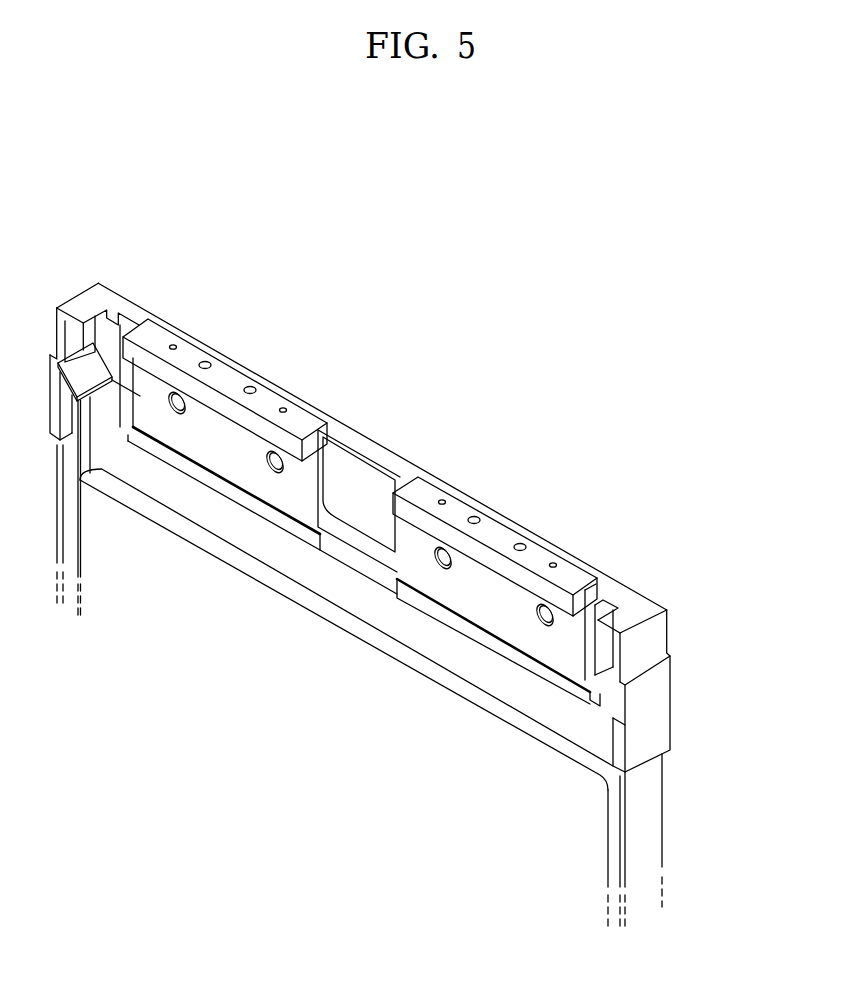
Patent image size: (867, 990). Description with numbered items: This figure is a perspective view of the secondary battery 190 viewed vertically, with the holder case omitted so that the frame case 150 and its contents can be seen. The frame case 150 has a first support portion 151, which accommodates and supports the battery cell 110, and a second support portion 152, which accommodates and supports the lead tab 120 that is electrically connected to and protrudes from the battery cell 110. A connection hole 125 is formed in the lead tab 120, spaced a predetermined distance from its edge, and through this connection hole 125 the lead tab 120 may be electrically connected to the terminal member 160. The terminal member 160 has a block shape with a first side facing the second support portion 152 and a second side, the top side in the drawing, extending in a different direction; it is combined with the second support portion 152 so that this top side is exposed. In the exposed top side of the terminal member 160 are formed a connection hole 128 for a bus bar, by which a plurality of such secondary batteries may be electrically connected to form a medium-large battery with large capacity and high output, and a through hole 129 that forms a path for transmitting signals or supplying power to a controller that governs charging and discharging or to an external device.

The battery cell 110 is at (593, 832).
The lead tab 120 is at (578, 636).
The connection hole 125 is at (535, 600).
The connection hole 128 is at (210, 362).
The through hole 129 is at (174, 344).
The frame case 150 is at (748, 712).
The first support portion 151 is at (655, 802).
The second support portion 152 is at (655, 715).
The terminal member 160 is at (299, 416).
The secondary battery 190 is at (170, 246).